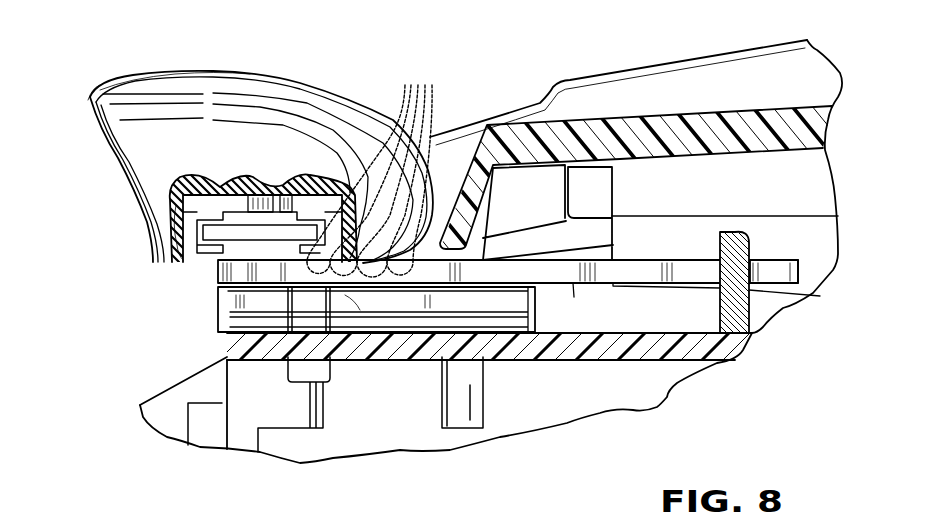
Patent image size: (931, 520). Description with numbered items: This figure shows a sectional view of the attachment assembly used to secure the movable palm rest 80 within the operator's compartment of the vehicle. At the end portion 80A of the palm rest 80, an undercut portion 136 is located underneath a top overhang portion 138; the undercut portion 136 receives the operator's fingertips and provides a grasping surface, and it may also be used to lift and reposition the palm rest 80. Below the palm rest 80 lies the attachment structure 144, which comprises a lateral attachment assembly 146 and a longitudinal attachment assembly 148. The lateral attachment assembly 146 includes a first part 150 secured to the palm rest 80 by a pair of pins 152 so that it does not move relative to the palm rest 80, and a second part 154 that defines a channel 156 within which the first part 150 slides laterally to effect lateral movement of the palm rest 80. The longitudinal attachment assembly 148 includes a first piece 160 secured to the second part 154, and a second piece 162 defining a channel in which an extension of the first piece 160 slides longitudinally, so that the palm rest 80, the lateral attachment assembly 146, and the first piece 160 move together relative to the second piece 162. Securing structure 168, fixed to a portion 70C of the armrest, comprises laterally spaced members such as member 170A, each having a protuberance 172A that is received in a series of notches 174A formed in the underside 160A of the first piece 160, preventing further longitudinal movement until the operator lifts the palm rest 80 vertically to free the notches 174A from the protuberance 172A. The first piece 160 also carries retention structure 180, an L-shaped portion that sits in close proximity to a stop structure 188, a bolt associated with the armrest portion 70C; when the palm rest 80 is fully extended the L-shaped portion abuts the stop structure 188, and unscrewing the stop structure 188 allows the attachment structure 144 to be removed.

The palm rest 80 is at (243, 113).
The end portion 80A is at (133, 80).
The undercut portion 136 is at (105, 147).
The top overhang portion 138 is at (90, 93).
The notches 174A is at (373, 168).
The first part 150 is at (283, 200).
The pins 152 is at (260, 203).
The second part 154 is at (186, 226).
The channel 156 is at (187, 270).
The lateral attachment assembly 146 is at (207, 262).
The first piece 160 is at (517, 273).
The underside 160A is at (572, 285).
The second piece 162 is at (230, 298).
The protuberance 172A is at (287, 287).
The member 170A is at (315, 305).
The securing structure 168 is at (303, 365).
The longitudinal attachment assembly 148 is at (437, 305).
The armrest portion 70C is at (493, 353).
The attachment structure 144 is at (545, 315).
The retention structure 180 is at (778, 268).
The stop structure 188 is at (730, 232).